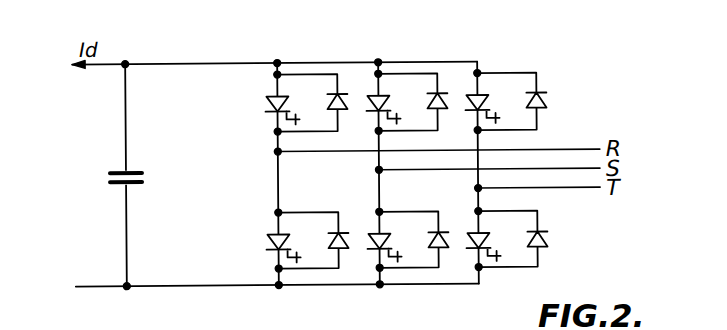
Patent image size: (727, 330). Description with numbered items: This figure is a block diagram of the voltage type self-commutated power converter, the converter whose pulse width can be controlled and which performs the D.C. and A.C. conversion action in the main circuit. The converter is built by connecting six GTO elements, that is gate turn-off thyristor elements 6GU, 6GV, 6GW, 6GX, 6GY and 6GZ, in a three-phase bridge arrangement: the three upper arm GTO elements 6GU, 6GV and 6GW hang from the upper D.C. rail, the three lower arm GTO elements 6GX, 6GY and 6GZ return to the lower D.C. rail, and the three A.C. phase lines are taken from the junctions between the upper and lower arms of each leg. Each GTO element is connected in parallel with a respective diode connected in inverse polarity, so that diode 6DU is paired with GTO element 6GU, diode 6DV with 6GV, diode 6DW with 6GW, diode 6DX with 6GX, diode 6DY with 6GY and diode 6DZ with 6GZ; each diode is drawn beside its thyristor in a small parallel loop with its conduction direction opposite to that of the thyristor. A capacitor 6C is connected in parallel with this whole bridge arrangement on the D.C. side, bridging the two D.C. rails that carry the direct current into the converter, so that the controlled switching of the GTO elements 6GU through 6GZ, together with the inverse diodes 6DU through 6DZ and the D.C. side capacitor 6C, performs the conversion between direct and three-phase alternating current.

The capacitor 6C is at (130, 167).
The GTO element 6GU is at (268, 104).
The GTO element 6GV is at (372, 98).
The GTO element 6GW is at (476, 97).
The GTO element 6GX is at (268, 241).
The GTO element 6GY is at (372, 240).
The GTO element 6GZ is at (474, 237).
The diode 6DU is at (333, 98).
The diode 6DV is at (432, 98).
The diode 6DW is at (545, 100).
The diode 6DX is at (335, 247).
The diode 6DY is at (436, 246).
The diode 6DZ is at (546, 238).